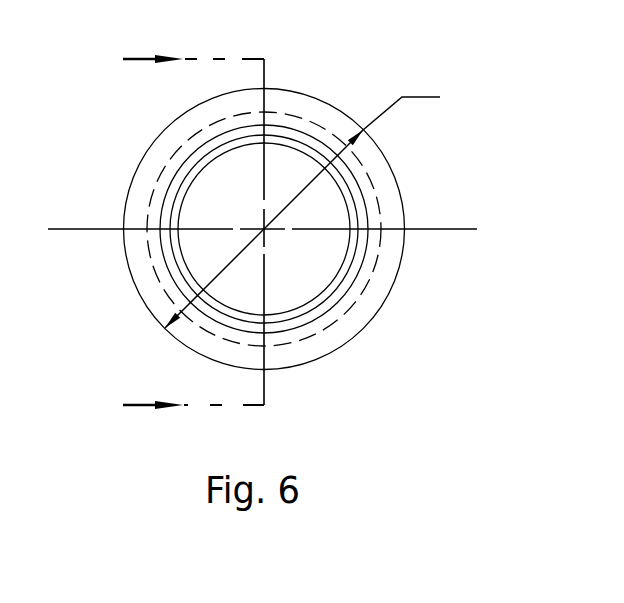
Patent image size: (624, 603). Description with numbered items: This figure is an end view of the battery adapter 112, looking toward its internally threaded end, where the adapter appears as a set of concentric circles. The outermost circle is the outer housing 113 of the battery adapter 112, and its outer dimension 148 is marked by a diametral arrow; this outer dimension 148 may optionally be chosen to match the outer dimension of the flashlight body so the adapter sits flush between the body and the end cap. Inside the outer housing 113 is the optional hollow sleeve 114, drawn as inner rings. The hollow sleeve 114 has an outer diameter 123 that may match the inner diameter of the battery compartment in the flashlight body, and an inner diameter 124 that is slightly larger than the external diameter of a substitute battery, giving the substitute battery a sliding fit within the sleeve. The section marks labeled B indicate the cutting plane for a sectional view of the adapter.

The battery adapter 112 is at (267, 206).
The outer housing 113 is at (398, 183).
The hollow sleeve 114 is at (185, 175).
The outer diameter 123 is at (349, 265).
The inner diameter 124 is at (295, 310).
The outer dimension 148 is at (317, 214).